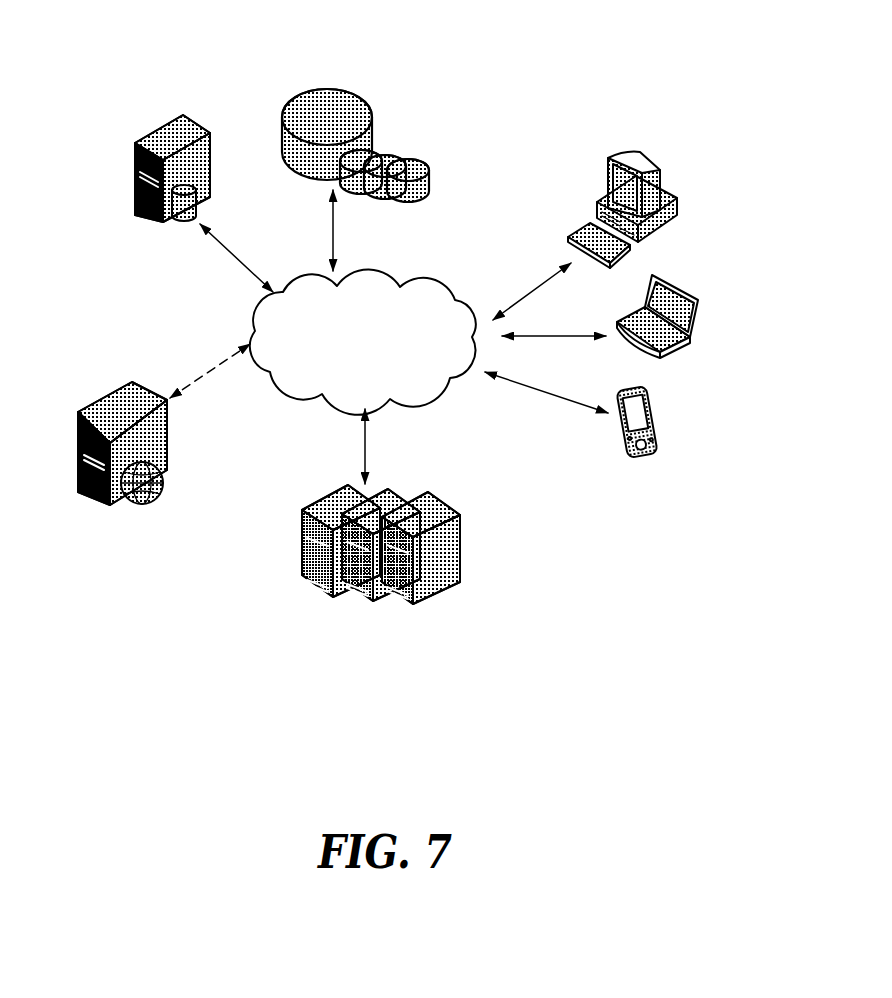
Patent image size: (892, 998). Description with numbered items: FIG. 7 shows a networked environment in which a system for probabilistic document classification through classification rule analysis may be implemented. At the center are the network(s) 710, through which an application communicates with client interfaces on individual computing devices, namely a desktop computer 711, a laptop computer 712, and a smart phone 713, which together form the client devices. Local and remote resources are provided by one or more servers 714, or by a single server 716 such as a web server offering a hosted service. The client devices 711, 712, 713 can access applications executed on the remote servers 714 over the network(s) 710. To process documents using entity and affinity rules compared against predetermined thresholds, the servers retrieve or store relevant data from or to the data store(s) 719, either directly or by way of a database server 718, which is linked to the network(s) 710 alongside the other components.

The network(s) 710 is at (373, 256).
The desktop computer 711 is at (663, 145).
The laptop computer 712 is at (698, 275).
The smart phone 713 is at (668, 391).
The servers 714 is at (331, 489).
The single server 716 is at (100, 393).
The database server 718 is at (172, 228).
The data store(s) 719 is at (341, 67).